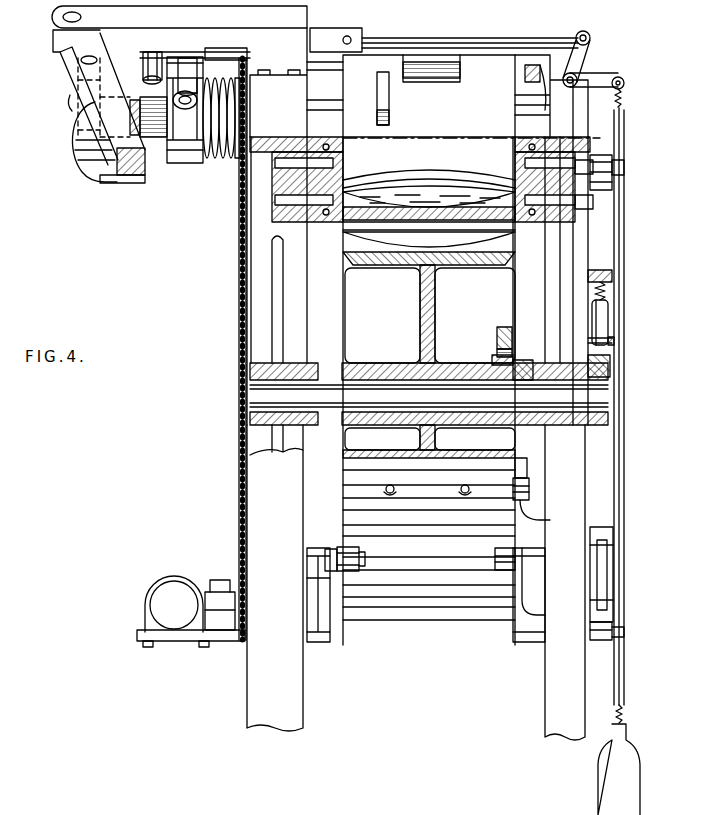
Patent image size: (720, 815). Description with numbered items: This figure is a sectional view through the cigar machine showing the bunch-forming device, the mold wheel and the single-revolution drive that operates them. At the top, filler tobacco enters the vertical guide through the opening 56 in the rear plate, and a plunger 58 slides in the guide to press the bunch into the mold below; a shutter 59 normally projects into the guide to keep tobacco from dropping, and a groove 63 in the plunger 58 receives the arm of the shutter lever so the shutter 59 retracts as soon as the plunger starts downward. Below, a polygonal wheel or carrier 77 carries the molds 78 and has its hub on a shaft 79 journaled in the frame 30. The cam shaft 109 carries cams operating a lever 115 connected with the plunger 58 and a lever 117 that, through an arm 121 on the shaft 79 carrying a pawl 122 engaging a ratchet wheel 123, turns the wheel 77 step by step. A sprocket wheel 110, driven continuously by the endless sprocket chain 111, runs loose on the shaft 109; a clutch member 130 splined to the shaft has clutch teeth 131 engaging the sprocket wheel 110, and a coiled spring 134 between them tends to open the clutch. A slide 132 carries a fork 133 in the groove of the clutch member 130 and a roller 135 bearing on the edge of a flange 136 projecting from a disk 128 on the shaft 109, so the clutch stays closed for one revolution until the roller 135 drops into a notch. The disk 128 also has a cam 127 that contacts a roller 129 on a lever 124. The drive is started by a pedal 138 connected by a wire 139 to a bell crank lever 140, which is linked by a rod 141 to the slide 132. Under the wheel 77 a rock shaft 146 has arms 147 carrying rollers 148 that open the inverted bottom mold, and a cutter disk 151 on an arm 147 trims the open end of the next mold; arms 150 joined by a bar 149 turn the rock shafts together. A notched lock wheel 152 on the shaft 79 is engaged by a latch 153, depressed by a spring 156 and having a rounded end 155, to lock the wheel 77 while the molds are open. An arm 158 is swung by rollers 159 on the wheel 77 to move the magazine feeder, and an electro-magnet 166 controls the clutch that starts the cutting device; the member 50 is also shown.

The flange 136 is at (179, 85).
The roller 135 is at (158, 62).
The fork 133 is at (187, 78).
The coiled spring 134 is at (232, 72).
The slide 132 is at (326, 33).
The lever 115 is at (436, 58).
The link or rod 141 is at (533, 42).
The bell crank lever 140 is at (585, 58).
The wire or rod 139 is at (621, 120).
The lever 117 is at (528, 88).
The groove 63 is at (383, 95).
The plunger 58 is at (429, 96).
The shutter 59 is at (392, 195).
The opening 56 is at (408, 200).
The mold 78 is at (429, 248).
The arm 150 is at (610, 180).
The frame 30 is at (573, 255).
The bar or link 149 is at (620, 295).
The spring 156 is at (605, 302).
The latch 153 is at (602, 316).
The rounded end 155 is at (612, 345).
The notched lock wheel 152 is at (610, 360).
The shaft 79 is at (600, 395).
The polygonal wheel or carrier 77 is at (420, 305).
The dog or pawl 122 is at (503, 330).
The arm 121 is at (522, 360).
The ratchet wheel 123 is at (493, 360).
The endless sprocket chain 111 is at (240, 318).
The sprocket wheel 110 is at (240, 200).
The clutch teeth 131 is at (218, 165).
The clutch member 130 is at (188, 165).
The lever 124 is at (127, 176).
The disk 128 is at (108, 183).
The cam shaft 109 is at (153, 140).
The cam 127 is at (77, 165).
The roller 129 is at (72, 100).
The arm 158 is at (527, 470).
The roller 159 is at (529, 494).
The roller 148 is at (345, 548).
The cutter disk 151 is at (337, 556).
The arm 147 is at (330, 596).
The frame 50 is at (613, 576).
The rock shaft 146 is at (418, 628).
The electro-magnet 166 is at (168, 608).
The pedal 138 is at (626, 773).